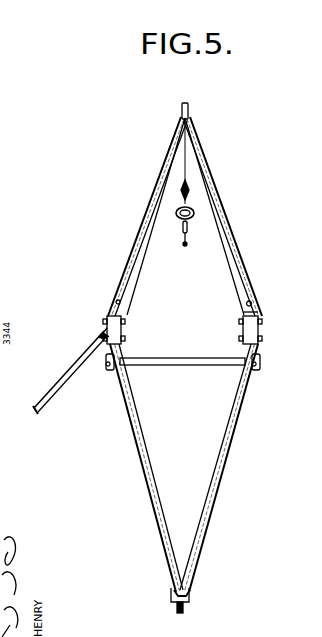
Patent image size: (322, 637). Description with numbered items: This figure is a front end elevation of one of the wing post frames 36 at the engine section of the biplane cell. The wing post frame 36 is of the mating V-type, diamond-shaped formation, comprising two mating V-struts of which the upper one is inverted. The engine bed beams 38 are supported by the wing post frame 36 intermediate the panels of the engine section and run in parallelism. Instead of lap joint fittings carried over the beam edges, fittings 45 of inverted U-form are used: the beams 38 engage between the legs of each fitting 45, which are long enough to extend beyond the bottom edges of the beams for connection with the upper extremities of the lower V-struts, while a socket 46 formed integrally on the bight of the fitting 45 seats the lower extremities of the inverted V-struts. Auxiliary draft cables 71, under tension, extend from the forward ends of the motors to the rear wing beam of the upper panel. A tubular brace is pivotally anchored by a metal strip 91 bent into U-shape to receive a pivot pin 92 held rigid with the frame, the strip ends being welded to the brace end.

The wing post frame 36 is at (228, 451).
The cable 71 is at (188, 200).
The engine bed beam 38 is at (258, 329).
The socket 46 is at (250, 313).
The fitting 45 is at (256, 343).
The metal strip 91 is at (100, 339).
The pivot pin 92 is at (104, 327).